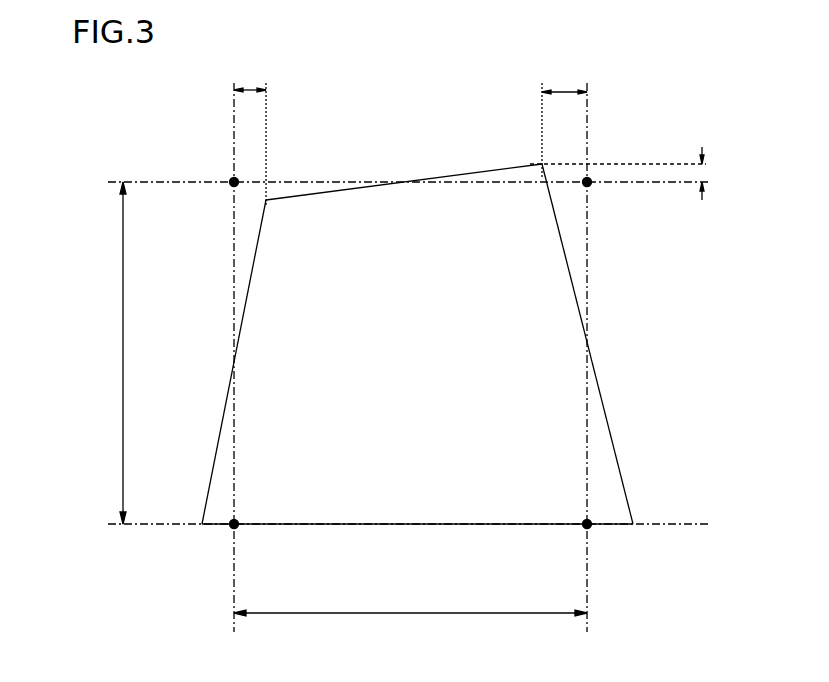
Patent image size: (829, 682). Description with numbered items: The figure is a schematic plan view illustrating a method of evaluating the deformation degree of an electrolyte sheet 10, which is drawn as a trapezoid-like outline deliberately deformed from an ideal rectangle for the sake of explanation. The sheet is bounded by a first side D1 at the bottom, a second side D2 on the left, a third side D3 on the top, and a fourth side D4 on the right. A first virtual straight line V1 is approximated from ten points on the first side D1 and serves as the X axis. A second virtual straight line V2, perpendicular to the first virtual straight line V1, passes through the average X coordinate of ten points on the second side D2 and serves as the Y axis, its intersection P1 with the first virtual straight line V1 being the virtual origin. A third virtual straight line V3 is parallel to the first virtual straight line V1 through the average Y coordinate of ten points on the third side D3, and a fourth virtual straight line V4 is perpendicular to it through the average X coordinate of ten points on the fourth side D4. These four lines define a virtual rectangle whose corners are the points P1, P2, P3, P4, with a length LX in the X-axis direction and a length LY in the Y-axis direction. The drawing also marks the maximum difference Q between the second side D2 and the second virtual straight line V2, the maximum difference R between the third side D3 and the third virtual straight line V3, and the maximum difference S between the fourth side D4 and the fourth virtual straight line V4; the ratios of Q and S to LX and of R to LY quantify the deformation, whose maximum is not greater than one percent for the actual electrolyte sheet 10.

The electrolyte sheet 10 is at (429, 353).
The first side D1 is at (312, 527).
The second side D2 is at (253, 260).
The third side D3 is at (464, 172).
The fourth side D4 is at (605, 415).
The intersection of first and second virtual straight lines P1 is at (217, 543).
The corner of virtual rectangle P2 is at (217, 166).
The corner of virtual rectangle P3 is at (604, 200).
The corner of virtual rectangle P4 is at (604, 543).
The first virtual straight line V1 is at (389, 527).
The second virtual straight line V2 is at (232, 375).
The third virtual straight line V3 is at (390, 184).
The fourth virtual straight line V4 is at (585, 375).
The length of virtual rectangle in X-axis direction LX is at (410, 632).
The length of virtual rectangle in Y-axis direction LY is at (103, 353).
The maximum difference between second side and second virtual straight line Q is at (250, 130).
The maximum difference between fourth side and fourth virtual straight line S is at (564, 117).
The maximum difference between third side and third virtual straight line R is at (633, 173).